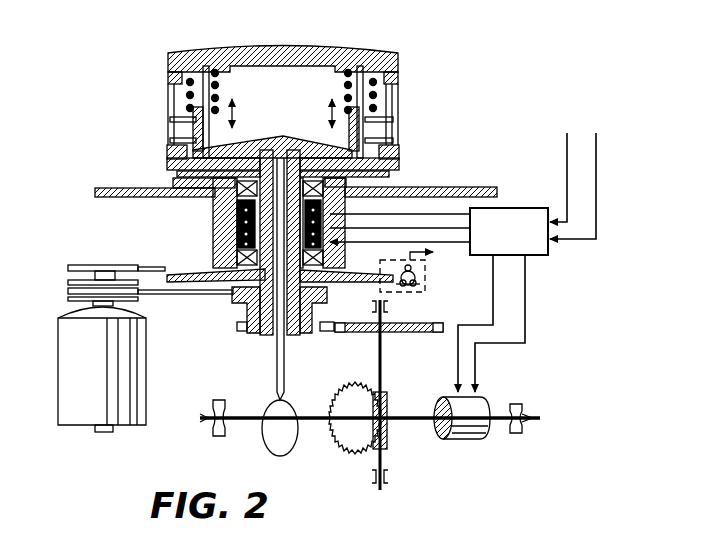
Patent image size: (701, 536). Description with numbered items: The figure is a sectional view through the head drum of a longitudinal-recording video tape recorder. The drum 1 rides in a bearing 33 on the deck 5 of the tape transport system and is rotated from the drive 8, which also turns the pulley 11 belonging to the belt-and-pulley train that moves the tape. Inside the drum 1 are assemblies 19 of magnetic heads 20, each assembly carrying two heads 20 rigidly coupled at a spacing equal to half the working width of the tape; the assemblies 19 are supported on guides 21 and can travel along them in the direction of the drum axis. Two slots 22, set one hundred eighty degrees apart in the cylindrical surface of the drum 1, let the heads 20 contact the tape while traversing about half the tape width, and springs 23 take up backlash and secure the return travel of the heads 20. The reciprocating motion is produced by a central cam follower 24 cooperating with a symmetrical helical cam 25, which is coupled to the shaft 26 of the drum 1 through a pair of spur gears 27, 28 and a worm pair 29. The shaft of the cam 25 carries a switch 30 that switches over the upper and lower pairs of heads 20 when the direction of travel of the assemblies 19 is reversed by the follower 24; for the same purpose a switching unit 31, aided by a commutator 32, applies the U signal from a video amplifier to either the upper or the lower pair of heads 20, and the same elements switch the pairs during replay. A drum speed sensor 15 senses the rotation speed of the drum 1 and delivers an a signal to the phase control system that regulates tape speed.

The drum 1 is at (172, 152).
The deck 5 is at (418, 186).
The drive 8 is at (65, 340).
The pulley 11 is at (72, 266).
The magnetic-tape drum speed sensor 15 is at (428, 279).
The assemblies of magnetic heads 19 is at (183, 128).
The magnetic heads 20 is at (178, 117).
The guides 21 is at (213, 76).
The slots 22 is at (398, 96).
The springs 23 is at (346, 79).
The central cam follower 24 is at (284, 365).
The symmetrical helical cam 25 is at (272, 435).
The shaft of the drum 26 is at (268, 341).
The spur gear 27 is at (407, 331).
The spur gear 28 is at (245, 333).
The worm pair 29 is at (343, 452).
The switch 30 is at (477, 442).
The switching unit 31 is at (506, 215).
The commutator 32 is at (240, 243).
The bearing 33 is at (218, 222).